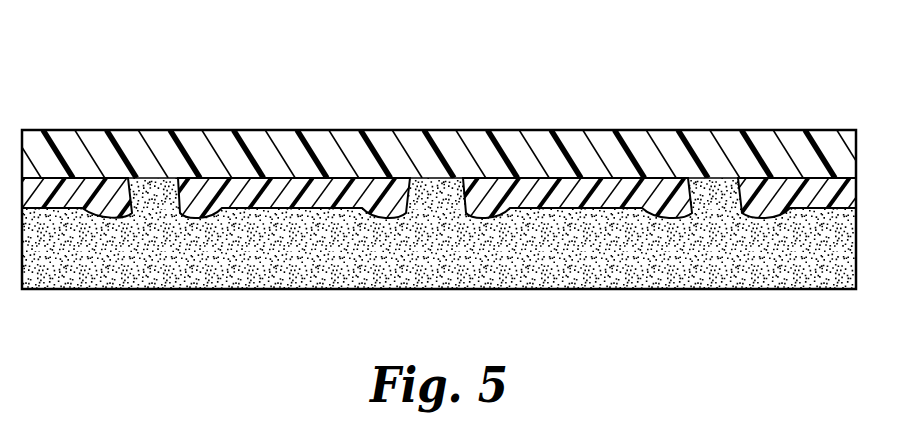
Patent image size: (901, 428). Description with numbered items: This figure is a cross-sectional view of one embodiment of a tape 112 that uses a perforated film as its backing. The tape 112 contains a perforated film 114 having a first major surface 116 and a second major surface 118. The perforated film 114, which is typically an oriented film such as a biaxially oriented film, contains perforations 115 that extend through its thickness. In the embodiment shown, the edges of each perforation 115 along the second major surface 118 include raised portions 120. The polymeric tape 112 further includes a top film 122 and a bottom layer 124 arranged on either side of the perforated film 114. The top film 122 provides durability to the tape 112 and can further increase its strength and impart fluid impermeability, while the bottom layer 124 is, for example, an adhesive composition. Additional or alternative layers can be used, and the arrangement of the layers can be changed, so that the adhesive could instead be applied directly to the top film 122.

The tape 112 is at (627, 73).
The perforated film 114 is at (808, 192).
The perforations 115 is at (148, 195).
The first major surface 116 is at (507, 178).
The second major surface 118 is at (545, 210).
The raised portions 120 is at (652, 208).
The top film 122 is at (712, 153).
The bottom layer 124 is at (663, 263).